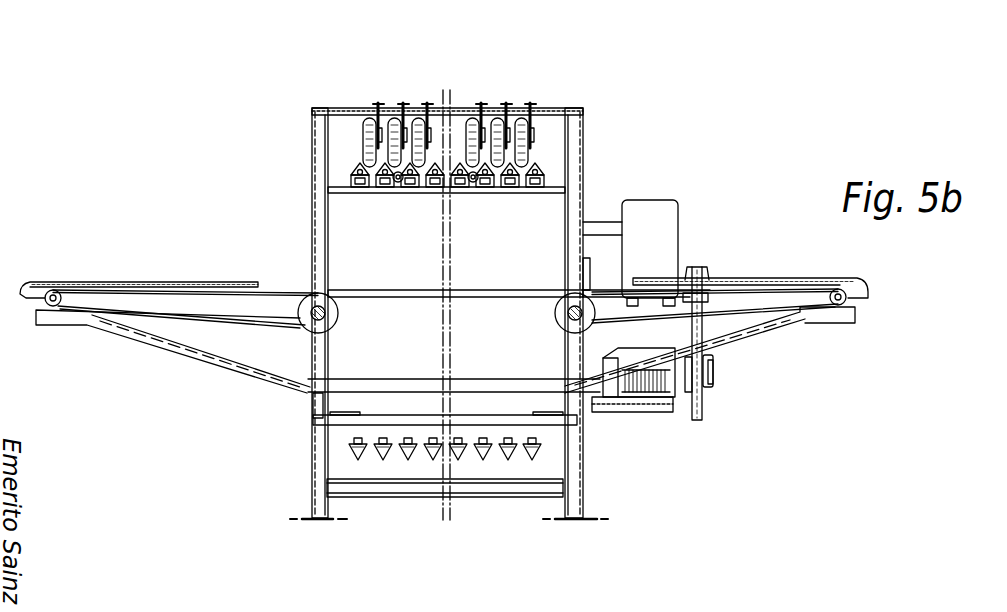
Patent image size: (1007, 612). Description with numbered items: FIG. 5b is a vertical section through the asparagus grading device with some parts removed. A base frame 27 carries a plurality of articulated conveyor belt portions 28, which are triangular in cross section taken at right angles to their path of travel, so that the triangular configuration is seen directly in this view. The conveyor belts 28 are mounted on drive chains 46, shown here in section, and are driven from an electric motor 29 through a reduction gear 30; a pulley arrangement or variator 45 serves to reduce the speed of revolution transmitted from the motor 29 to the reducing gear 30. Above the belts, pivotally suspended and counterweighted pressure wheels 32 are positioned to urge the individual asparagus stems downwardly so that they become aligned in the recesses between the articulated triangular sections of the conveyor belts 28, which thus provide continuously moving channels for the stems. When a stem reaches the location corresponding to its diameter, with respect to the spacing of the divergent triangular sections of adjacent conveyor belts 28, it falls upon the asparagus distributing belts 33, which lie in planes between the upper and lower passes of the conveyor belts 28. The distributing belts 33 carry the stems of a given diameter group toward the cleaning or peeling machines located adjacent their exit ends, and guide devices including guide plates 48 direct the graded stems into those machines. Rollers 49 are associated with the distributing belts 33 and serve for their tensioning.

The base frame 27 is at (572, 173).
The conveyor belt portions 28 is at (478, 185).
The electric motor 29 is at (663, 390).
The reduction gear 30 is at (673, 208).
The pressure wheels 32 is at (523, 113).
The asparagus distributing belts 33 is at (165, 287).
The variator 45 is at (703, 386).
The drive chains 46 is at (402, 188).
The guide plates 48 is at (80, 284).
The rollers 49 is at (310, 297).